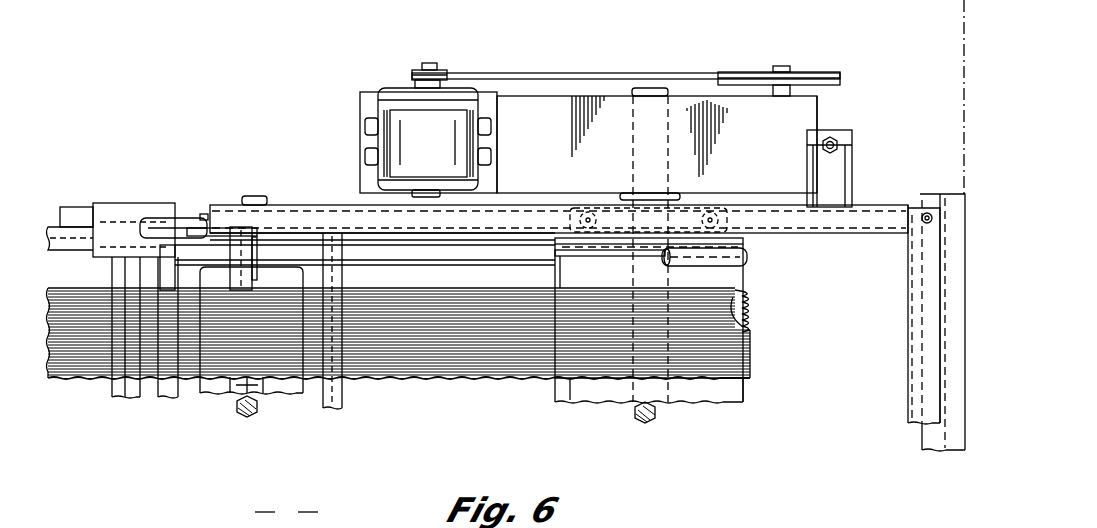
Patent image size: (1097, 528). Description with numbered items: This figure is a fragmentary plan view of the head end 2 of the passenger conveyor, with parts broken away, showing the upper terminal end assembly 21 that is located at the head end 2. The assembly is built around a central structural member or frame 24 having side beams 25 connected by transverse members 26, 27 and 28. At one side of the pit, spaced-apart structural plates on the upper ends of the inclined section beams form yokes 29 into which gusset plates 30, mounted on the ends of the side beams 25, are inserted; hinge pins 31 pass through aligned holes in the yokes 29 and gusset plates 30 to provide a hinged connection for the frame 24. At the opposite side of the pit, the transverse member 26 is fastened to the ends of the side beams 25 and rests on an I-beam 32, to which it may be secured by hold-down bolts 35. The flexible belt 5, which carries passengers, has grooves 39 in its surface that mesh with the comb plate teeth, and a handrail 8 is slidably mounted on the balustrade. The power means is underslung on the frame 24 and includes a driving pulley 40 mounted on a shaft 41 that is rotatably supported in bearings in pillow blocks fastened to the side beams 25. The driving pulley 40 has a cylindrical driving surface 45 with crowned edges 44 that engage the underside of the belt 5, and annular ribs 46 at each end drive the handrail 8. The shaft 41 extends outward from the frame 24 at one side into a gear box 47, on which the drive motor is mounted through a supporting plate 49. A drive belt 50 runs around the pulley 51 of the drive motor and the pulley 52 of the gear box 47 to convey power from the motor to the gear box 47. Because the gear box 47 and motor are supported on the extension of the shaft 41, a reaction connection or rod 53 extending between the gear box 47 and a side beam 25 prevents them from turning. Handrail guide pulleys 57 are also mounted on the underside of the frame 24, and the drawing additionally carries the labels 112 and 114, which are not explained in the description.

The head end 2 is at (804, 405).
The flexible belt 5 is at (750, 330).
The handrail 8 is at (752, 262).
The upper terminal end assembly 21 is at (866, 196).
The frame 24 is at (882, 212).
The side beam 25 is at (895, 224).
The transverse member 26 is at (915, 335).
The transverse member 27 is at (335, 410).
The transverse member 28 is at (170, 408).
The yoke 29 is at (155, 233).
The gusset plate 30 is at (217, 228).
The hinge pin 31 is at (197, 217).
The I-beam 32 is at (955, 452).
The hold-down bolt 35 is at (928, 214).
The groove 39 is at (750, 357).
The driving pulley 40 is at (740, 392).
The shaft 41 is at (660, 412).
The crowned edge 44 is at (748, 290).
The cylindrical driving surface 45 is at (592, 393).
The annular rib 46 is at (560, 250).
The gear box 47 is at (803, 110).
The supporting plate 49 is at (537, 110).
The drive belt 50 is at (595, 76).
The pulley 51 is at (420, 70).
The pulley 52 is at (823, 73).
The reaction rod 53 is at (835, 143).
The handrail guide pulley 57 is at (277, 392).
The element 112 is at (309, 520).
The element 114 is at (265, 520).